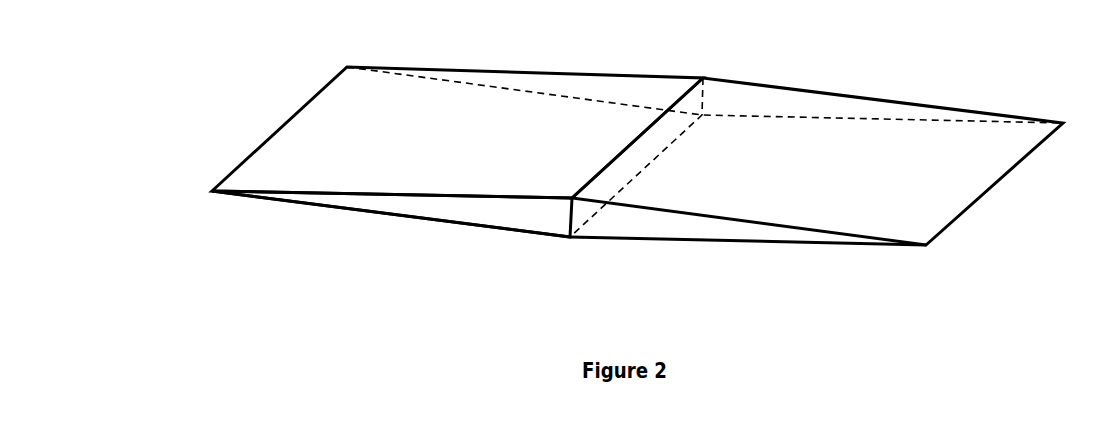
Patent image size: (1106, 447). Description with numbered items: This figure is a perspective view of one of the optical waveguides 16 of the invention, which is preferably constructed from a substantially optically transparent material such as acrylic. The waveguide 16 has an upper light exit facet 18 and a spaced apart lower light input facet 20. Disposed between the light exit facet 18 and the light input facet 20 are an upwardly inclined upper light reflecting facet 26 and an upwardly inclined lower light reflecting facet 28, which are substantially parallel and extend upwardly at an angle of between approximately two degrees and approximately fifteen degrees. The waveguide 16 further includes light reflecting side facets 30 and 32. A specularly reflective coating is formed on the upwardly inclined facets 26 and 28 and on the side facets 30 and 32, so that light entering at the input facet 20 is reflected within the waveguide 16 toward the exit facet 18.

The optical waveguide 16 is at (286, 56).
The upper light exit facet 18 is at (872, 177).
The lower light input facet 20 is at (338, 207).
The upper light reflecting facet 26 is at (355, 128).
The lower light reflecting facet 28 is at (672, 240).
The light reflecting side facet 30 is at (552, 219).
The light reflecting side facet 32 is at (708, 93).